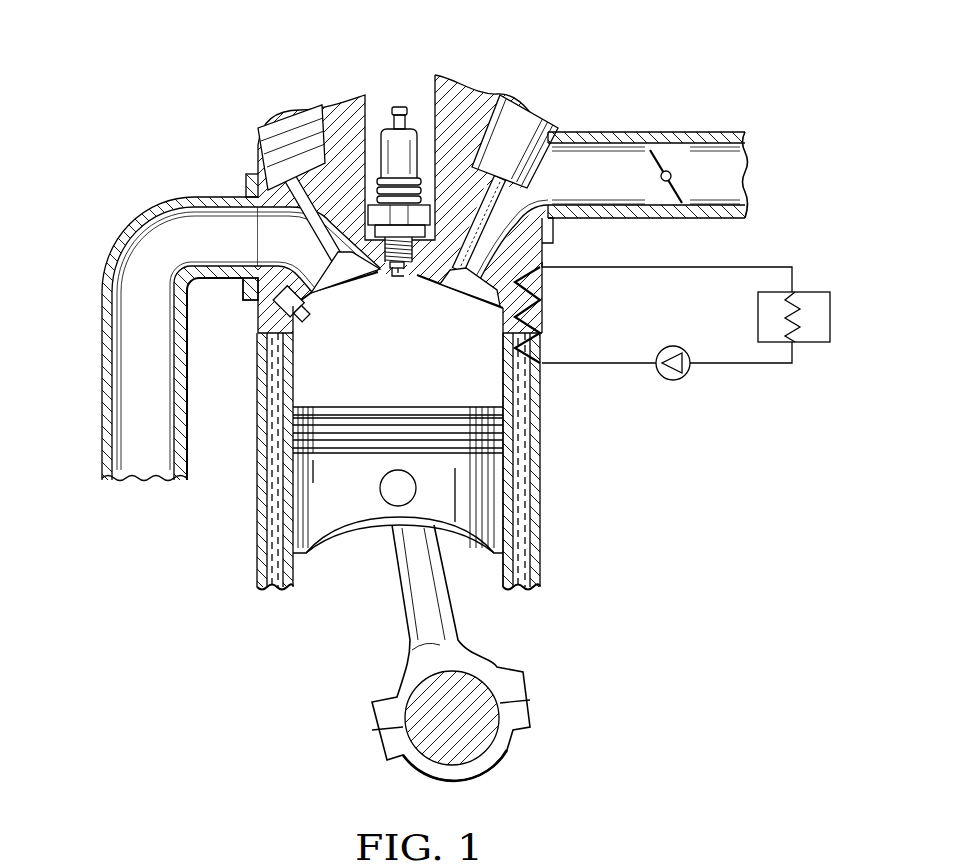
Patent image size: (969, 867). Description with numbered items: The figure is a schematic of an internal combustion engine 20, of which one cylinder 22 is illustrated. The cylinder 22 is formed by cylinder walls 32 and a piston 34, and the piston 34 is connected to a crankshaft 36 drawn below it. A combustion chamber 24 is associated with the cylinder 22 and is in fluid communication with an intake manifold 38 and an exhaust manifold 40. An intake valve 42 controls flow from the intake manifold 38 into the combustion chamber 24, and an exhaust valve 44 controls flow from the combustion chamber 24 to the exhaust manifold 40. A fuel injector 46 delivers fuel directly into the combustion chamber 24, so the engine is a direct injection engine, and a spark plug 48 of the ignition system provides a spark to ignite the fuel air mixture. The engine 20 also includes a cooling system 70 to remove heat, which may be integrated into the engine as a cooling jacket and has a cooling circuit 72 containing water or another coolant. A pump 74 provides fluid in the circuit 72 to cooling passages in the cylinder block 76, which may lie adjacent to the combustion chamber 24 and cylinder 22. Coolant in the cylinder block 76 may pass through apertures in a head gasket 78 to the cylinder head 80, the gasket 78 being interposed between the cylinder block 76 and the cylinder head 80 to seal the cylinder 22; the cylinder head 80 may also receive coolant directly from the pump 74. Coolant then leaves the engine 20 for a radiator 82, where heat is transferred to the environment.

The internal combustion engine 20 is at (385, 401).
The cylinder 22 is at (366, 355).
The combustion chamber 24 is at (447, 361).
The cylinder walls 32 is at (543, 437).
The piston 34 is at (443, 488).
The crankshaft 36 is at (410, 697).
The intake manifold 38 is at (624, 114).
The exhaust manifold 40 is at (258, 233).
The intake valve 42 is at (527, 205).
The exhaust valve 44 is at (283, 198).
The fuel injector 46 is at (288, 300).
The spark plug 48 is at (387, 127).
The cooling system 70 is at (706, 330).
The cooling circuit 72 is at (742, 270).
The pump 74 is at (673, 383).
The cylinder block 76 is at (543, 495).
The head gasket 78 is at (540, 300).
The cylinder head 80 is at (543, 262).
The radiator 82 is at (807, 292).